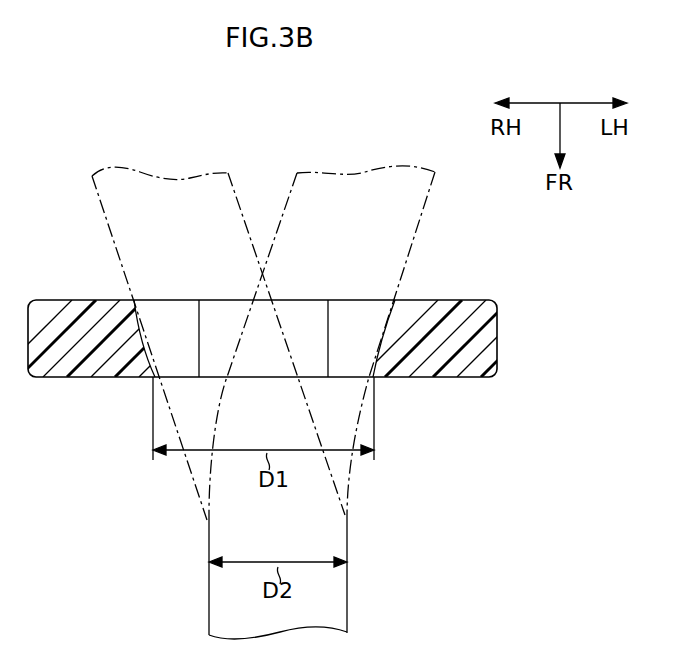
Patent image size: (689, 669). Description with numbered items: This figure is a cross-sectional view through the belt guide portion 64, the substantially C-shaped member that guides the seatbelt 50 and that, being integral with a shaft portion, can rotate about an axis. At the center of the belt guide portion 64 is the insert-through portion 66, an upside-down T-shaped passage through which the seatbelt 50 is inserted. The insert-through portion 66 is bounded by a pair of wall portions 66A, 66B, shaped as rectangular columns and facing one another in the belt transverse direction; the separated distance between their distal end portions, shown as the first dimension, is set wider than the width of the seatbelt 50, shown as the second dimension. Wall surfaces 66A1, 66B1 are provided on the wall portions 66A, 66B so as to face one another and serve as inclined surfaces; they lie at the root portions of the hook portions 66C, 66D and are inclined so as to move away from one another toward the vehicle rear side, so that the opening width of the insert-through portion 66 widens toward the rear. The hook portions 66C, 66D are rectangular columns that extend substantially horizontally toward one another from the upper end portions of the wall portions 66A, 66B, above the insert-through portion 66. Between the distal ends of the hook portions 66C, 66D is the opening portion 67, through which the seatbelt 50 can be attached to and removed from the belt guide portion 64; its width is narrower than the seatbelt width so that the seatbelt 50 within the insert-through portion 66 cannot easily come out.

The seatbelt 50 is at (320, 185).
The belt guide portion 64 is at (501, 326).
The insert-through portion 66 is at (303, 322).
The opening portion 67 is at (200, 322).
The wall portion 66A is at (83, 408).
The wall portion 66B is at (447, 378).
The hook portion 66C is at (147, 325).
The wall surface 66A1 is at (152, 340).
The hook portion 66D is at (350, 320).
The wall surface 66B1 is at (390, 318).